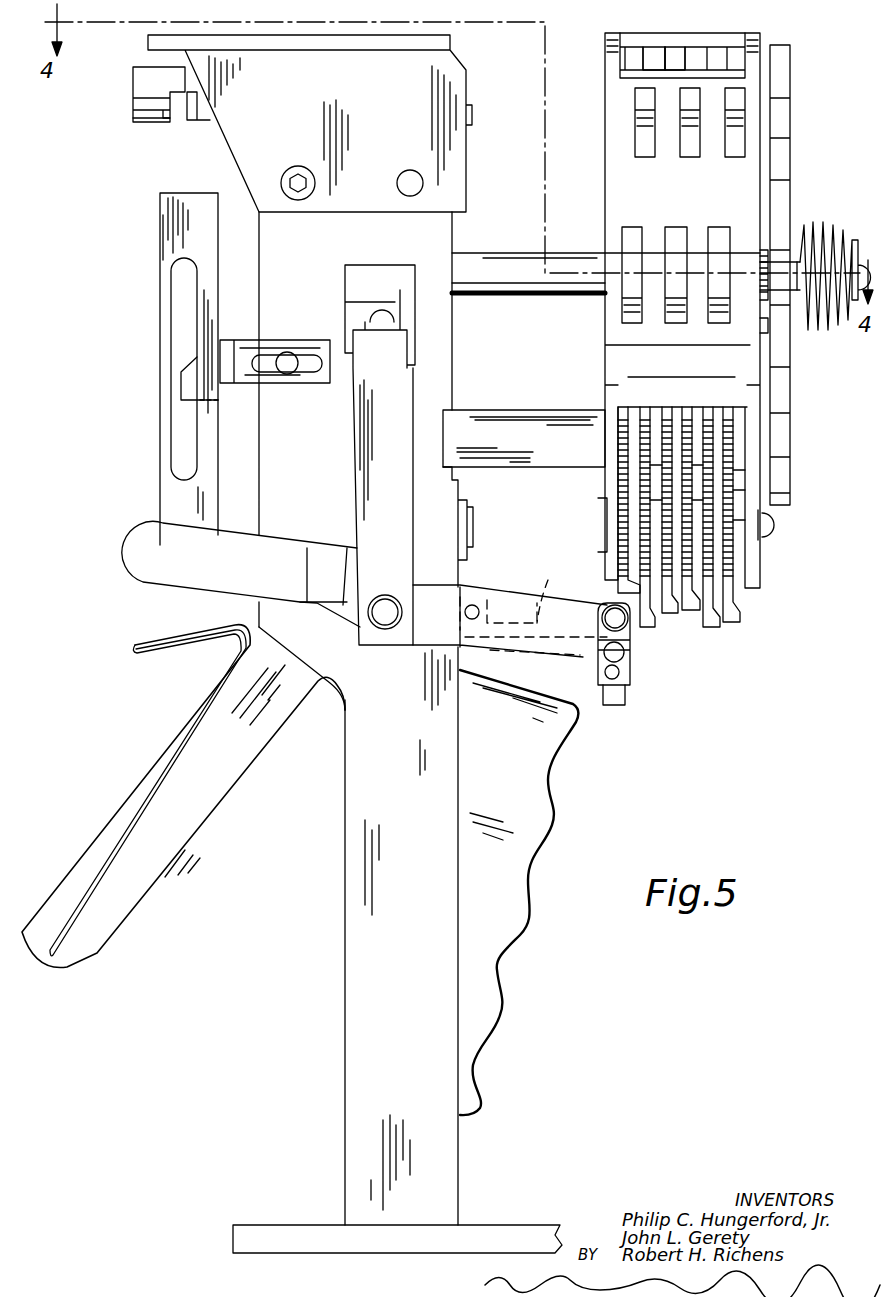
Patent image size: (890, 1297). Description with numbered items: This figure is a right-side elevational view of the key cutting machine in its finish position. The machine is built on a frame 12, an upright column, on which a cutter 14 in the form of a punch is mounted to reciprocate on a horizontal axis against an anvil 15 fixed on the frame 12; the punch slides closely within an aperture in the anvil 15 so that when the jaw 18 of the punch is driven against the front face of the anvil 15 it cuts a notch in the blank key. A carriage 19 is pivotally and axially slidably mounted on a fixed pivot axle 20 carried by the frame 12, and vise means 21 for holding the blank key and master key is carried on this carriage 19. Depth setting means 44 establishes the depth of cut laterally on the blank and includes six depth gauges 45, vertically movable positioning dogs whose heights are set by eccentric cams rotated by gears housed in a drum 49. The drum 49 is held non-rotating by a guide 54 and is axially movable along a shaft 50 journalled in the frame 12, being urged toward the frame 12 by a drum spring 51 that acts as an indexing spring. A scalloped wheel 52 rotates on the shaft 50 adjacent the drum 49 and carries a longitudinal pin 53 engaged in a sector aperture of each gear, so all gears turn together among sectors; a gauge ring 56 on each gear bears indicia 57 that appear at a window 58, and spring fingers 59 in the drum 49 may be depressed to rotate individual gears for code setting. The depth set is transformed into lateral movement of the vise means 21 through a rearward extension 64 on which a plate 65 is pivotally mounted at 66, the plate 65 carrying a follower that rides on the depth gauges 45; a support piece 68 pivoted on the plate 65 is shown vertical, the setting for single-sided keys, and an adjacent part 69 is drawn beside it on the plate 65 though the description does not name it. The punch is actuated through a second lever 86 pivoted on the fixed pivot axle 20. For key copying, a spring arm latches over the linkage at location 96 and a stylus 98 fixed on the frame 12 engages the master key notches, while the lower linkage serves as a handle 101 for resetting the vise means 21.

The frame 12 is at (458, 72).
The cutter 14 is at (133, 75).
The anvil 15 is at (207, 124).
The jaw 18 is at (170, 120).
The carriage 19 is at (413, 587).
The fixed pivot axle 20 is at (385, 620).
The vise means 21 is at (172, 497).
The depth setting means 44 is at (711, 342).
The depth gauges 45 is at (727, 622).
The drum 49 is at (748, 190).
The shaft 50 is at (522, 257).
The drum spring 51 is at (820, 240).
The scalloped wheel 52 is at (790, 80).
The longitudinal pin 53 is at (770, 300).
The guide 54 is at (507, 412).
The gauge ring 56 is at (722, 55).
The indicia 57 is at (700, 48).
The window 58 is at (655, 43).
The spring fingers 59 is at (632, 240).
The rearward extension 64 is at (528, 652).
The plate 65 is at (557, 589).
The pivot 66 is at (474, 605).
The support piece 68 is at (618, 705).
The roller 69 is at (622, 672).
The second lever 86 is at (268, 740).
The latch location 96 is at (332, 548).
The stylus 98 is at (228, 386).
The handle 101 is at (150, 570).